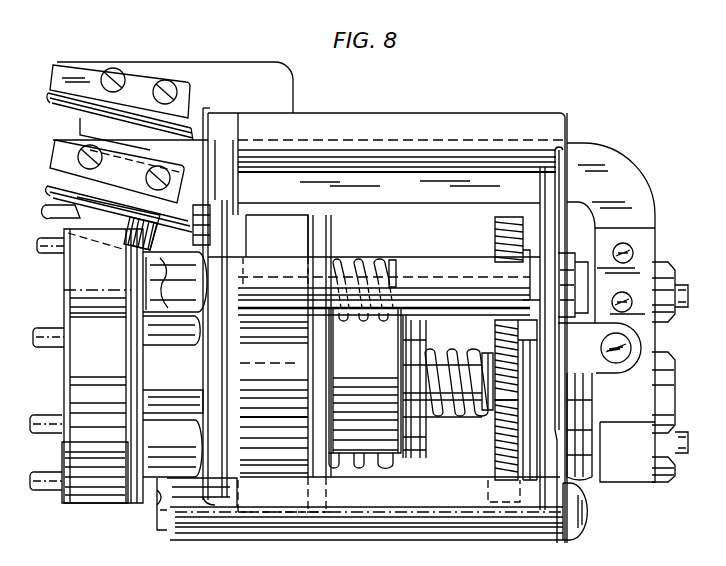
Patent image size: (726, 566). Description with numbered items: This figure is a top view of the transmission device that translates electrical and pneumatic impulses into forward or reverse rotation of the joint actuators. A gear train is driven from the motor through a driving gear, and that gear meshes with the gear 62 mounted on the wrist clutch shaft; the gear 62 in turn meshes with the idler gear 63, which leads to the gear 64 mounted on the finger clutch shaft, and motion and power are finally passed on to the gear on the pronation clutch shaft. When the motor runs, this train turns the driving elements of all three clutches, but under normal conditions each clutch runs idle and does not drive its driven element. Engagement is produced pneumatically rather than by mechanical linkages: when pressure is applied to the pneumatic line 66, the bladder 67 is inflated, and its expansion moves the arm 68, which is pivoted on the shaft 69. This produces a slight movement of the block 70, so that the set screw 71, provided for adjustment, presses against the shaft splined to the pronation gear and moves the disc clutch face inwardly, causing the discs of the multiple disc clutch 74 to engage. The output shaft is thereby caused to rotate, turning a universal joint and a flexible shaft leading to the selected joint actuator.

The gear 62 is at (493, 466).
The idler gear 63 is at (495, 335).
The gear 64 is at (495, 227).
The pneumatic line 66 is at (58, 216).
The bladder 67 is at (57, 182).
The arm 68 is at (197, 145).
The shaft 69 is at (631, 347).
The block 70 is at (644, 368).
The set screw 71 is at (689, 393).
The multiple disc clutch 74 is at (360, 445).